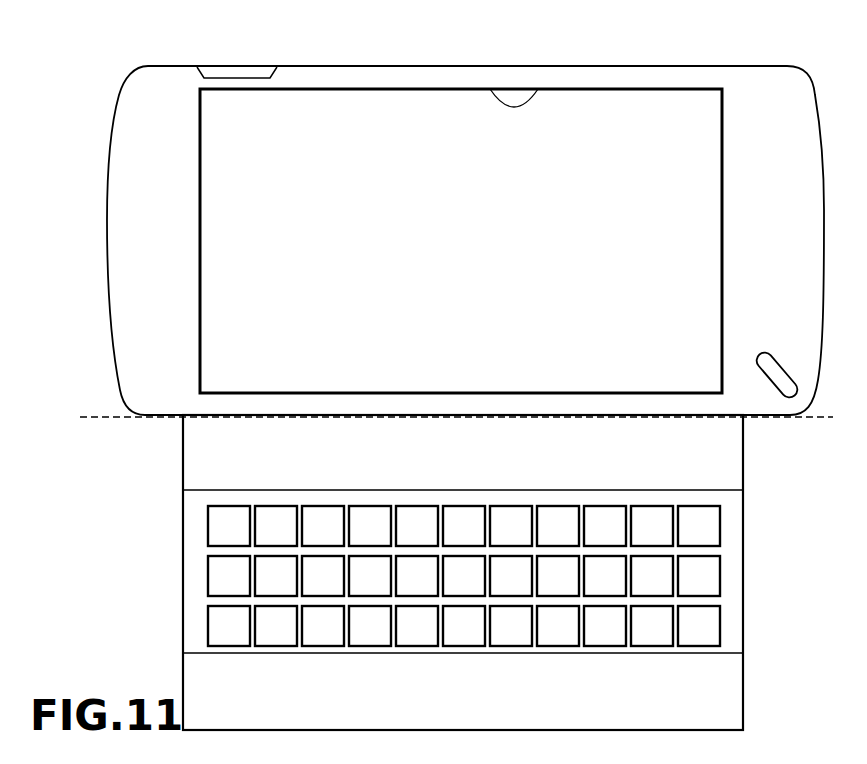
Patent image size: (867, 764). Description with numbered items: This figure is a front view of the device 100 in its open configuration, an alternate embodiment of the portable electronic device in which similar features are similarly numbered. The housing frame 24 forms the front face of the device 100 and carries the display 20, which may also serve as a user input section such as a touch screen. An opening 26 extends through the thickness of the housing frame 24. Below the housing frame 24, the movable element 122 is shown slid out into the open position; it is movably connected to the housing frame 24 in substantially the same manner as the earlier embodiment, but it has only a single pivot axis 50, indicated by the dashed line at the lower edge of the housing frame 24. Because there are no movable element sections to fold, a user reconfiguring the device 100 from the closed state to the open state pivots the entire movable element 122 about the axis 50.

The device 100 is at (434, 213).
The display 20 is at (338, 125).
The housing frame 24 is at (782, 128).
The opening 26 is at (492, 91).
The pivot axis 50 is at (826, 420).
The movable element 122 is at (743, 697).